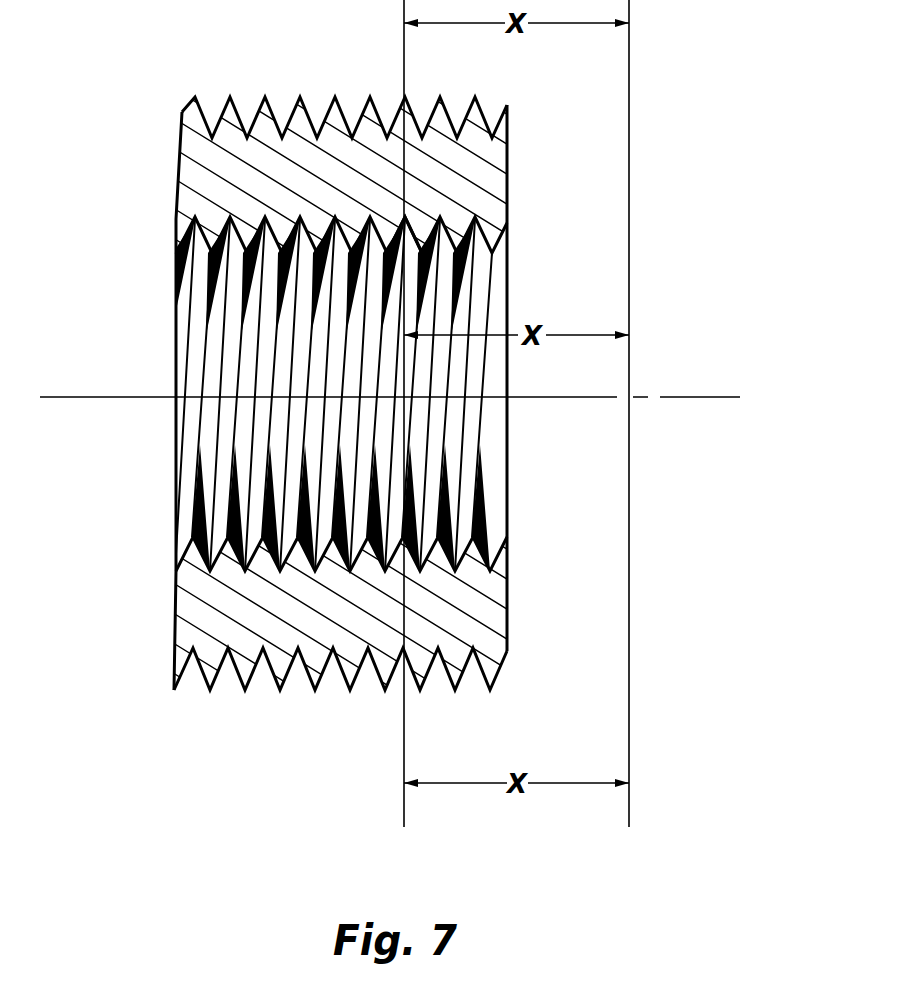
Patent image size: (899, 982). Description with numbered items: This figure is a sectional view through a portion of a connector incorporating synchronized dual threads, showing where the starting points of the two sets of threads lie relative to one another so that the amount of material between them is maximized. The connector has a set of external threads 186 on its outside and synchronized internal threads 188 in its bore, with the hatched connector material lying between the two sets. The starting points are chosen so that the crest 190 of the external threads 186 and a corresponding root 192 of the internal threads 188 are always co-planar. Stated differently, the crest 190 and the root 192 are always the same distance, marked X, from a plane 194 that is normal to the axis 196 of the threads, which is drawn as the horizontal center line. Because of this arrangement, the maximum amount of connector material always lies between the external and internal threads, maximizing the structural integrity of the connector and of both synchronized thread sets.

The external threads 186 is at (262, 108).
The internal threads 188 is at (272, 250).
The crest 190 is at (404, 100).
The root 192 is at (406, 222).
The plane 194 is at (629, 595).
The axis 196 is at (690, 397).